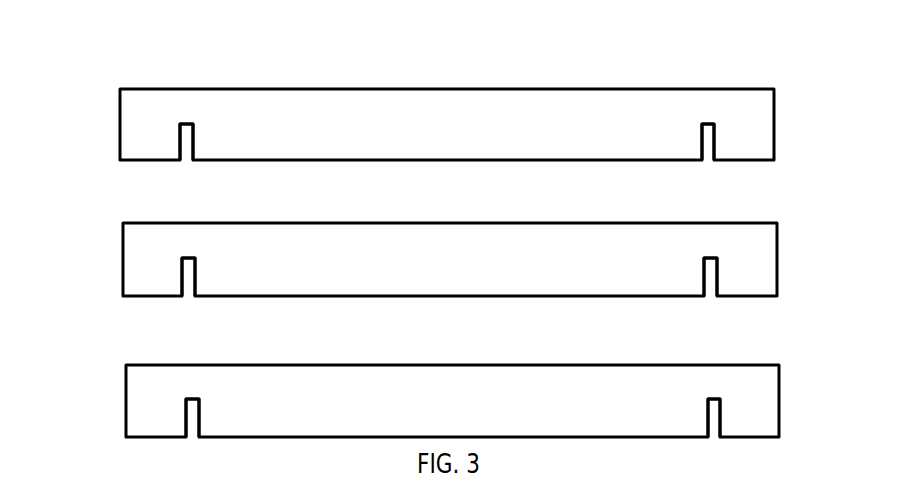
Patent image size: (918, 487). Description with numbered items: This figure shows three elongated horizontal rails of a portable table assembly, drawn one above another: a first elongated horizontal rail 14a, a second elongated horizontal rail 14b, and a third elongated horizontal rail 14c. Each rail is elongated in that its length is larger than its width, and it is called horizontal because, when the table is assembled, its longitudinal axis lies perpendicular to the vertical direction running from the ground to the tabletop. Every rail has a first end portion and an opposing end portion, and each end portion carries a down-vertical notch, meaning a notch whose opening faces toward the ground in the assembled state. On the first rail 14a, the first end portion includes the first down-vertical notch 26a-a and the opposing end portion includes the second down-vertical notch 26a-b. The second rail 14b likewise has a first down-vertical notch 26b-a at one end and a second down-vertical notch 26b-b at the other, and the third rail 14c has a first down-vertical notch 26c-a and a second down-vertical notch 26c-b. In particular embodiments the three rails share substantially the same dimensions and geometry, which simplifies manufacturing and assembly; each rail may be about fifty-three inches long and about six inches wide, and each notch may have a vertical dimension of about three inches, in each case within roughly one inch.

The first elongated horizontal rail 14a is at (98, 87).
The second elongated horizontal rail 14b is at (103, 233).
The third elongated horizontal rail 14c is at (106, 380).
The first down-vertical notch of the first rail 26a-a is at (198, 117).
The second down-vertical notch of the first rail 26a-b is at (720, 117).
The first down-vertical notch of the second rail 26b-a is at (200, 252).
The second down-vertical notch of the second rail 26b-b is at (722, 252).
The first down-vertical notch of the third rail 26c-a is at (200, 392).
The second down-vertical notch of the third rail 26c-b is at (722, 393).